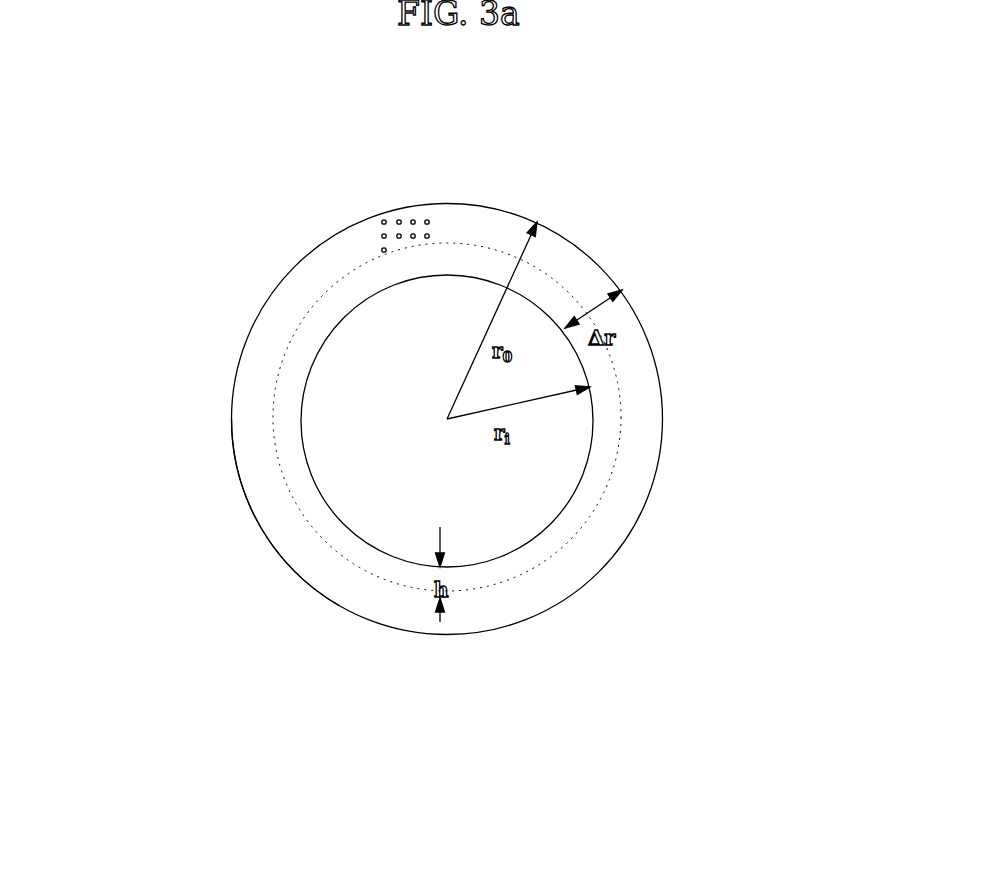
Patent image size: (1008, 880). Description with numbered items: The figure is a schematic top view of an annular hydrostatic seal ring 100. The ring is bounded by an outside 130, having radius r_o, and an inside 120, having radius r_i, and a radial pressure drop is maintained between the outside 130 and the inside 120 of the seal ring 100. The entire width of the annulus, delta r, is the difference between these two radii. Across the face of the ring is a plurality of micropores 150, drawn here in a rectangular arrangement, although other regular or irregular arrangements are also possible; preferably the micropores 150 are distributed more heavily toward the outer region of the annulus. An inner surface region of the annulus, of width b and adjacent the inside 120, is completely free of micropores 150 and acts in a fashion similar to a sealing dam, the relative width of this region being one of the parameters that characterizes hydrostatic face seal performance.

The hydrostatic seal ring 100 is at (649, 428).
The inside of the seal ring 120 is at (299, 415).
The outside of the seal ring 130 is at (258, 528).
The micropores 150 is at (382, 235).